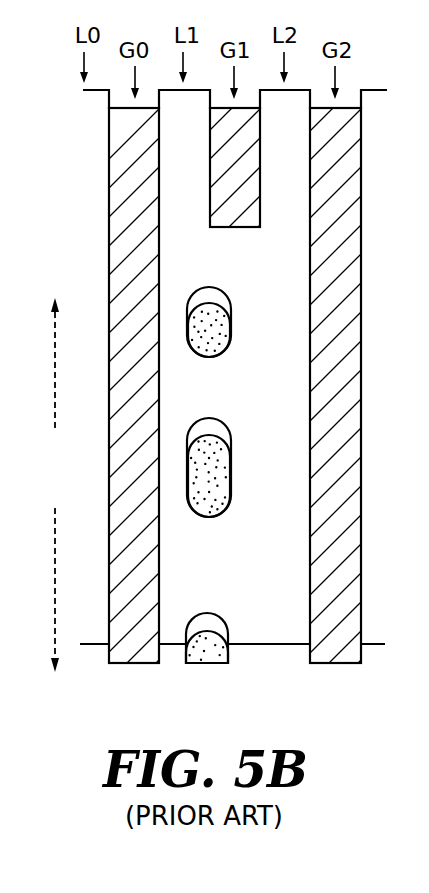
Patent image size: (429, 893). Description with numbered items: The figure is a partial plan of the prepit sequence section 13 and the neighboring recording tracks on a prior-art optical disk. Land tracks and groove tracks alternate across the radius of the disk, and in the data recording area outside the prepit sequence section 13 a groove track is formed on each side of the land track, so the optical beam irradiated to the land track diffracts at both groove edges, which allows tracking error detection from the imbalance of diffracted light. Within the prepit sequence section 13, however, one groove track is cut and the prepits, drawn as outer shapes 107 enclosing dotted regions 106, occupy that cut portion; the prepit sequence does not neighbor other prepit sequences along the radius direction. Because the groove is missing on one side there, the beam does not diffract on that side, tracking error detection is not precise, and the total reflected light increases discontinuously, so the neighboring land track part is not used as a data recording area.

The light-shielding layer / electrode region (outer shell) 107 is at (218, 298).
The transmissive region (dotted area) 106 is at (208, 328).
The prepit sequence section 13 is at (62, 485).